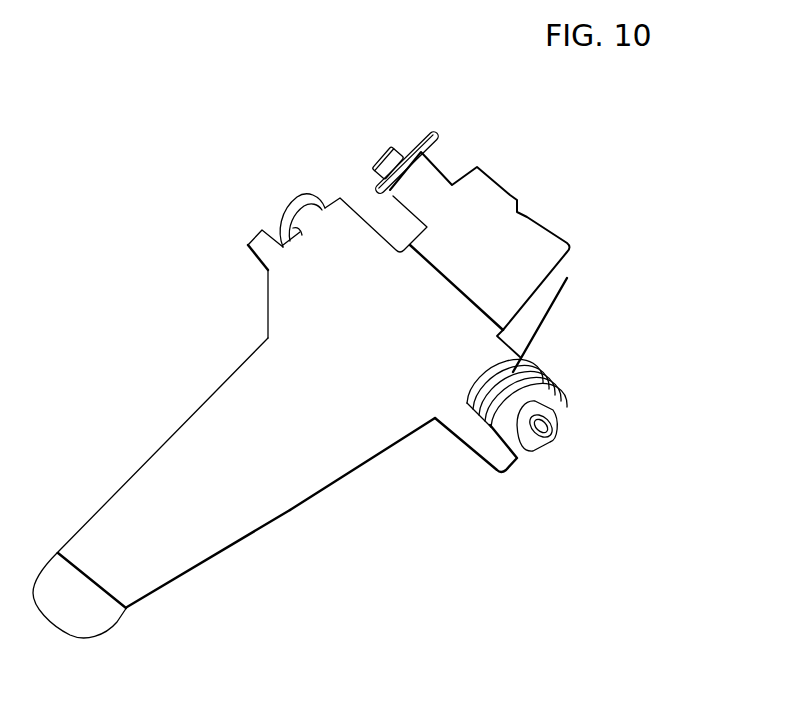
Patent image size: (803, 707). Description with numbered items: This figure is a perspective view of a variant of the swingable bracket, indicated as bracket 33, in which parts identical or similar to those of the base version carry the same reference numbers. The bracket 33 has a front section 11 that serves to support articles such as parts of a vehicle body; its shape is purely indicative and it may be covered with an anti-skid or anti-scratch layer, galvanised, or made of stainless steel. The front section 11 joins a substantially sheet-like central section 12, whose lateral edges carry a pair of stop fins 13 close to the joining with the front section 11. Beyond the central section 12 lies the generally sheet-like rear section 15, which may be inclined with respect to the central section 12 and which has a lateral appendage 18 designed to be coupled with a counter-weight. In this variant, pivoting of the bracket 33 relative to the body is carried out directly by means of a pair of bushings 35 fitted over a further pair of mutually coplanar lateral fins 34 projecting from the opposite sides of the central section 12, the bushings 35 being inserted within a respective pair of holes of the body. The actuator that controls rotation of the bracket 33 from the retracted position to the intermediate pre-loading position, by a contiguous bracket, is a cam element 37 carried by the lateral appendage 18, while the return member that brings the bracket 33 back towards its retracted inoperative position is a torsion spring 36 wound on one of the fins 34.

The front section 11 is at (126, 463).
The central section 12 is at (282, 340).
The stop fins 13 is at (262, 244).
The rear section 15 is at (555, 253).
The lateral appendage 18 is at (380, 160).
The swingable bracket 33 is at (130, 305).
The lateral fins 34 is at (520, 400).
The bushings 35 is at (293, 212).
The torsion spring 36 is at (530, 360).
The cam element 37 is at (426, 130).